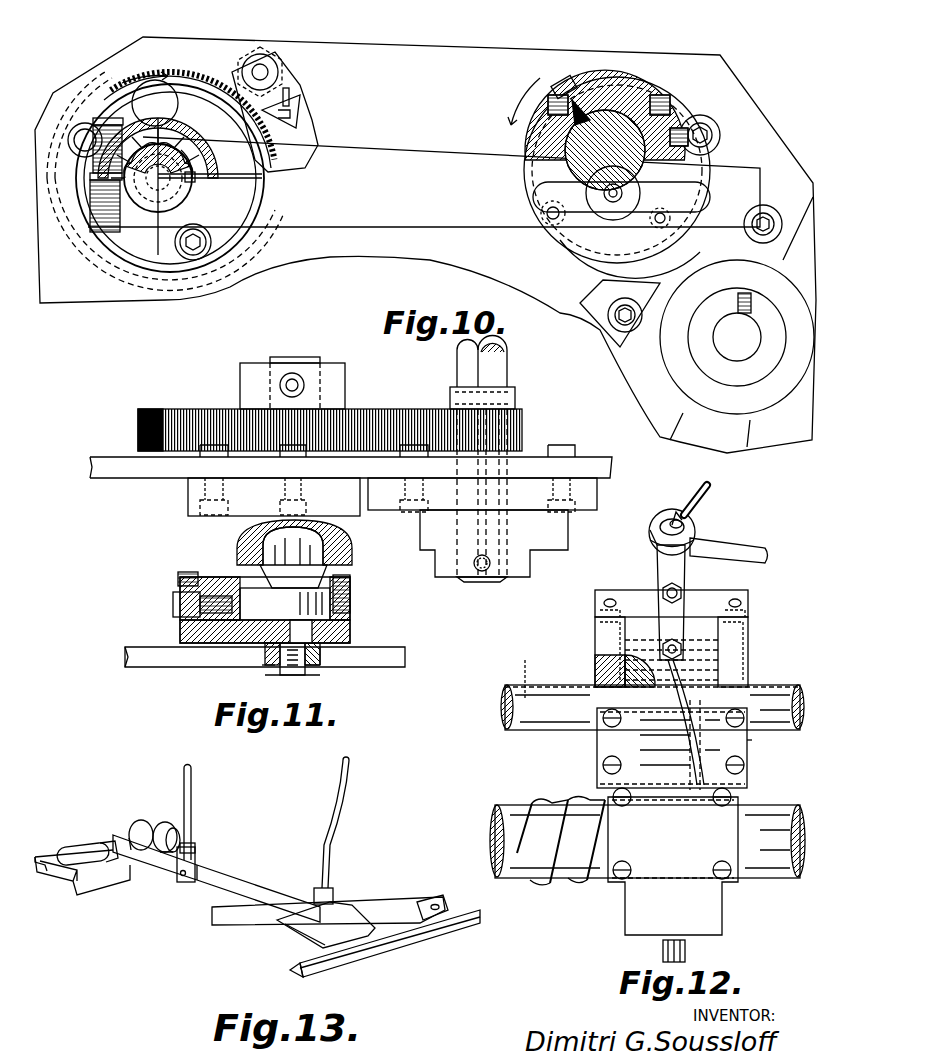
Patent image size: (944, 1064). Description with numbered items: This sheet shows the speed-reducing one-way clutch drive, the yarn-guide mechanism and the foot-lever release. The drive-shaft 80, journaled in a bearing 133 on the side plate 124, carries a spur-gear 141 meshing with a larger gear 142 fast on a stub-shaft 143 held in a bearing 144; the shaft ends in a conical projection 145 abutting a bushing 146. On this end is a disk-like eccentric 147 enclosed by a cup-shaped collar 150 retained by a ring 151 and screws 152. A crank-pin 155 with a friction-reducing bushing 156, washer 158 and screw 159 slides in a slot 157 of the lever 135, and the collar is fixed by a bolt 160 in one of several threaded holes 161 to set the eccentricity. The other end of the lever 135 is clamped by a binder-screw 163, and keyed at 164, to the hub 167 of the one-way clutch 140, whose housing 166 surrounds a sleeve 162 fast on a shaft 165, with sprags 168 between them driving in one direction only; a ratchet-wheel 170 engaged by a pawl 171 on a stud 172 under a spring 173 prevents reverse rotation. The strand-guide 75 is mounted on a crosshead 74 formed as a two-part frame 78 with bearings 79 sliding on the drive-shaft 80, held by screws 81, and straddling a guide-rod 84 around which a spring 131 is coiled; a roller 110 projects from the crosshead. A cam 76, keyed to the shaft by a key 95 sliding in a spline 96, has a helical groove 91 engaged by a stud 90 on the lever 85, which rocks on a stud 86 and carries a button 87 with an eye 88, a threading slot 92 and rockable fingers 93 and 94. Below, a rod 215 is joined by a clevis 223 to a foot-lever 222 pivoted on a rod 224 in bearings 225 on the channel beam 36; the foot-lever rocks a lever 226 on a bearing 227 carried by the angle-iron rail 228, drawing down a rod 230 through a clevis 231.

In FIG. 13, the channel beam 36 is at (100, 885).
In FIG. 12, the carriage or crosshead 74 is at (598, 611).
In FIG. 12, the strand-guide 75 is at (647, 519).
In FIG. 12, the cam 76 is at (645, 733).
In FIG. 12, the two-part rectangular frame 78 is at (605, 638).
In FIG. 12, the bearings 79 is at (595, 682).
In FIG. 10, the drive-shaft 80 is at (720, 340).
In FIG. 11, the drive-shaft 80 is at (500, 372).
In FIG. 12, the drive-shaft 80 is at (548, 722).
In FIG. 12, the screws 81 is at (745, 760).
In FIG. 12, the guide-rod 84 is at (540, 878).
In FIG. 12, the arm or lever 85 is at (658, 571).
In FIG. 12, the stud 86 is at (683, 590).
In FIG. 12, the button 87 is at (652, 537).
In FIG. 12, the eye 88 is at (667, 516).
In FIG. 12, the stud 90 is at (668, 690).
In FIG. 12, the helical groove 91 is at (690, 726).
In FIG. 12, the slot 92 is at (682, 510).
In FIG. 12, the rockable finger 93 is at (712, 493).
In FIG. 12, the rockable finger 94 is at (765, 549).
In FIG. 12, the key 95 is at (598, 668).
In FIG. 11, the spline 96 is at (470, 363).
In FIG. 12, the spline 96 is at (523, 674).
In FIG. 12, the bowl or roller 110 is at (663, 951).
In FIG. 10, the side plate 124 is at (418, 250).
In FIG. 11, the side plate 124 is at (600, 470).
In FIG. 12, the spring 131 is at (530, 797).
In FIG. 10, the bearing 133 is at (770, 400).
In FIG. 11, the bearing 133 is at (447, 570).
In FIG. 10, the lever 135 is at (423, 160).
In FIG. 11, the lever 135 is at (170, 665).
In FIG. 10, the one-way clutch 140 is at (204, 112).
In FIG. 11, the spur-gear 141 is at (522, 418).
In FIG. 11, the gear 142 is at (138, 432).
In FIG. 11, the stub-shaft 143 is at (300, 357).
In FIG. 10, the bearing 144 is at (722, 147).
In FIG. 11, the bearing 144 is at (235, 525).
In FIG. 11, the conical projection 145 is at (295, 580).
In FIG. 11, the bushing 146 is at (350, 545).
In FIG. 10, the eccentric 147 is at (640, 85).
In FIG. 11, the eccentric 147 is at (335, 610).
In FIG. 10, the cup-shaped collar 150 is at (675, 90).
In FIG. 11, the cup-shaped collar 150 is at (350, 630).
In FIG. 11, the ring 151 is at (225, 585).
In FIG. 11, the screws 152 is at (190, 578).
In FIG. 11, the crank-pin 155 is at (285, 670).
In FIG. 11, the friction-reducing bushing 156 is at (320, 660).
In FIG. 10, the slot 157 is at (735, 192).
In FIG. 11, the slot 157 is at (322, 658).
In FIG. 11, the washer 158 is at (268, 670).
In FIG. 10, the screw 159 is at (610, 222).
In FIG. 11, the screw 159 is at (310, 672).
In FIG. 10, the stud or bolt 160 is at (562, 80).
In FIG. 11, the stud or bolt 160 is at (175, 608).
In FIG. 10, the threaded holes 161 is at (622, 78).
In FIG. 11, the threaded holes 161 is at (195, 628).
In FIG. 10, the inner sleeve 162 is at (158, 232).
In FIG. 10, the binder-screw 163 is at (95, 120).
In FIG. 10, the key 164 is at (200, 178).
In FIG. 10, the shaft 165 is at (115, 228).
In FIG. 10, the cylindrical housing 166 is at (195, 138).
In FIG. 10, the hub 167 is at (195, 198).
In FIG. 10, the sprags 168 is at (205, 158).
In FIG. 10, the ratchet-wheel 170 is at (205, 85).
In FIG. 10, the pawl 171 is at (285, 130).
In FIG. 10, the stud 172 is at (284, 72).
In FIG. 10, the spring 173 is at (292, 97).
In FIG. 13, the rod 215 is at (192, 797).
In FIG. 13, the foot-lever 222 is at (250, 890).
In FIG. 13, the clevis 223 is at (197, 858).
In FIG. 13, the rod 224 is at (88, 847).
In FIG. 13, the bearings 225 is at (152, 820).
In FIG. 13, the lever 226 is at (385, 902).
In FIG. 13, the bearing 227 is at (445, 895).
In FIG. 13, the horizontal angle-iron rail 228 is at (428, 935).
In FIG. 13, the rod 230 is at (335, 805).
In FIG. 13, the clevis 231 is at (333, 898).